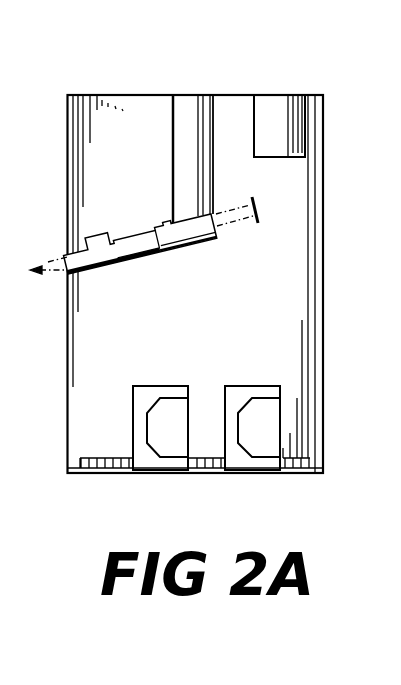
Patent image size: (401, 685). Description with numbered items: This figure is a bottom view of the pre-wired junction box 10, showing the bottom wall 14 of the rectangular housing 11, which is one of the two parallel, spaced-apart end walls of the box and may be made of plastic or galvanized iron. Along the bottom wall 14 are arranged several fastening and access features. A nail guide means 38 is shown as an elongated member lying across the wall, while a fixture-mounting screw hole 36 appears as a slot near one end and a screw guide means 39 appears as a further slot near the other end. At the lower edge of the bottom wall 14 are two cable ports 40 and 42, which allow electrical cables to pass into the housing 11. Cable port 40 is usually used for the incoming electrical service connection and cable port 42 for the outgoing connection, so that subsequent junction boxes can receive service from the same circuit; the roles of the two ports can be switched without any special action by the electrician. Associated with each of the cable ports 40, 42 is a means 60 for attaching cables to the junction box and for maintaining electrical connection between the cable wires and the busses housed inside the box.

The pre-wired junction box 10 is at (102, 57).
The rectangular housing 11 is at (63, 171).
The bottom wall 14 is at (221, 323).
The fixture-mounting screw hole 36 is at (190, 105).
The nail guide means 38 is at (163, 216).
The screw guide means 39 is at (280, 103).
The cable port 40 is at (168, 440).
The cable port 42 is at (262, 438).
The means for attaching cables 60 is at (240, 390).